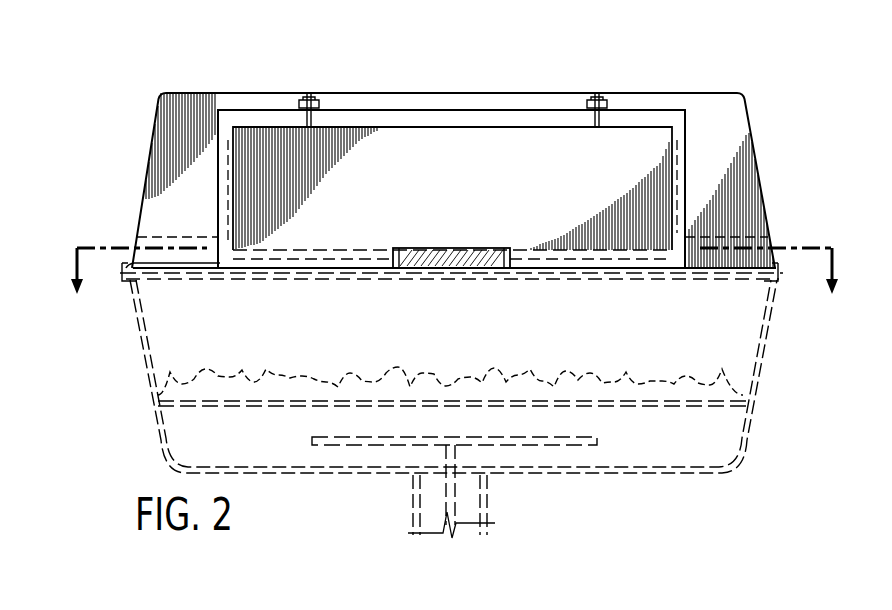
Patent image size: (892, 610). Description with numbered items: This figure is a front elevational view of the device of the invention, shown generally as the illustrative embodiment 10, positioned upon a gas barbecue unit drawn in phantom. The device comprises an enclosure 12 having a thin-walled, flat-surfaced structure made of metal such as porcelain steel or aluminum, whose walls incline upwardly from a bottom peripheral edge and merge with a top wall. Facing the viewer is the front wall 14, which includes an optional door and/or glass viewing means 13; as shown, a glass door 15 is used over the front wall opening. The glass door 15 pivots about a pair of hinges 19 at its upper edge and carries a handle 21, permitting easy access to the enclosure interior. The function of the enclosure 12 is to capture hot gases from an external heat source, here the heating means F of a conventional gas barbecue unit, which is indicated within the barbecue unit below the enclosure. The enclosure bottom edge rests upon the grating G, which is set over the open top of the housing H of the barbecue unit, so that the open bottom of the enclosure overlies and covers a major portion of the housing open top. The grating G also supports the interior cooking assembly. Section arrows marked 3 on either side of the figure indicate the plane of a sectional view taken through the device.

The illustrative embodiment of the invention 10 is at (208, 88).
The enclosure 12 is at (738, 88).
The glass viewing means 13 is at (415, 130).
The front wall 14 is at (172, 197).
The glass door 15 is at (356, 206).
The hinges 19 is at (309, 93).
The handle 21 is at (447, 247).
The grating G is at (463, 285).
The housing H is at (772, 338).
The heating means F is at (331, 368).
The section line 3- 3 is at (453, 290).